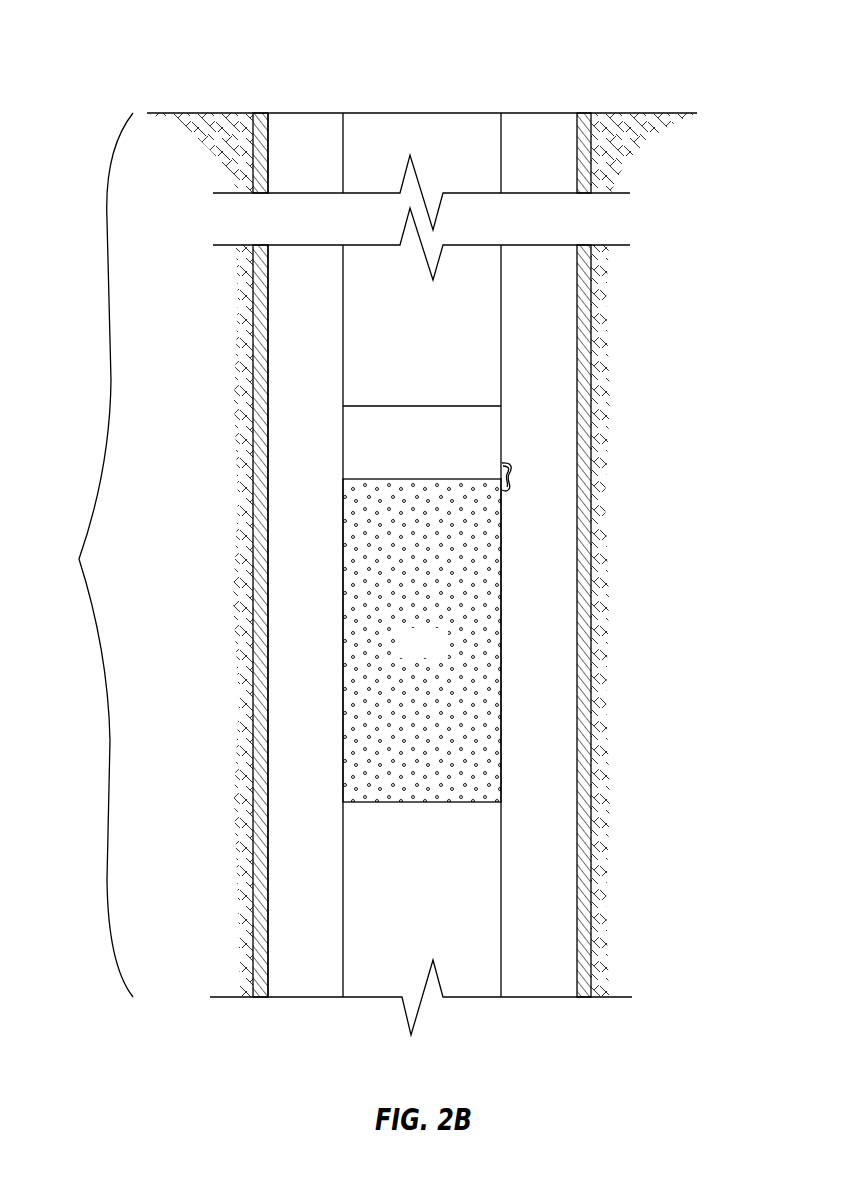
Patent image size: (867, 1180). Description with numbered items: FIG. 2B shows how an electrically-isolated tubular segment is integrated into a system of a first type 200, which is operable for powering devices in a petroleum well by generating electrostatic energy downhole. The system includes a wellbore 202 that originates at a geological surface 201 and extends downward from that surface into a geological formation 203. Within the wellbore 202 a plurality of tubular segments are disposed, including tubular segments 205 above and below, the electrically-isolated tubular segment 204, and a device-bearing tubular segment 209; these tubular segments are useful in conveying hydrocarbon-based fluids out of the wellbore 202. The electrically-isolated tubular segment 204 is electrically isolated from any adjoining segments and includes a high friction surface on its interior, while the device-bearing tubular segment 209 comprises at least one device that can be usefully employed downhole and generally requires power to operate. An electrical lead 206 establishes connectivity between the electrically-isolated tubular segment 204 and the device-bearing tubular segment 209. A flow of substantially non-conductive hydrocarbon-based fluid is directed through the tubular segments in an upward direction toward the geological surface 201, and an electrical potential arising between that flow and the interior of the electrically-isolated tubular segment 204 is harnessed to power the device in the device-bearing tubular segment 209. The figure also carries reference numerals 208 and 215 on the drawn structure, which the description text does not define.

The system of a first type 200 is at (172, 52).
The geological surface 201 is at (675, 113).
The wellbore 202 is at (81, 555).
The geological formation 203 is at (617, 448).
The electrically-isolated tubular segment 204 is at (440, 652).
The tubular segment 205 is at (440, 327).
The electrical lead 206 is at (512, 485).
The casing 208 is at (252, 493).
The device-bearing tubular segment 209 is at (440, 454).
The annulus 215 is at (280, 312).